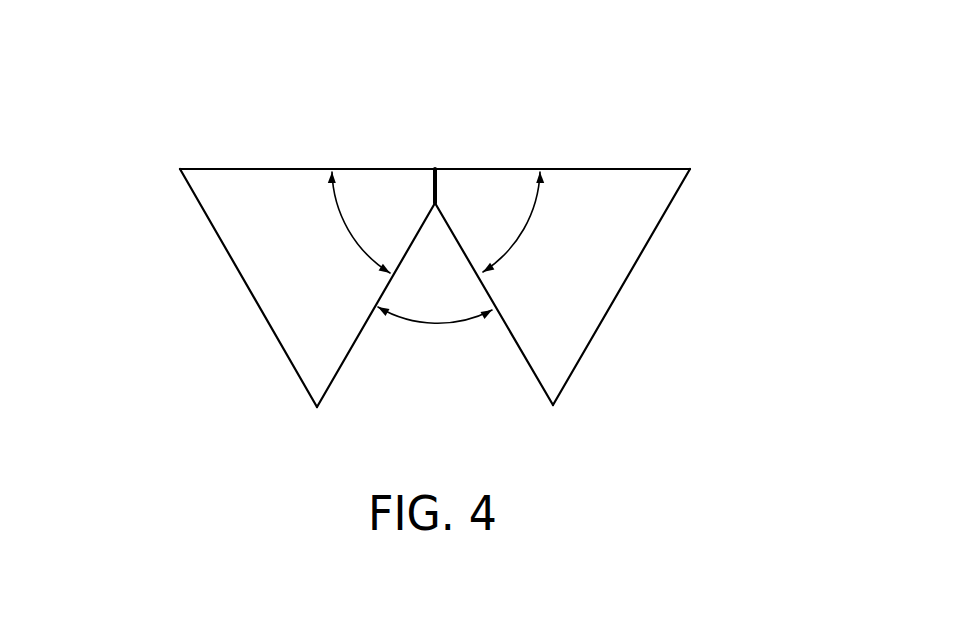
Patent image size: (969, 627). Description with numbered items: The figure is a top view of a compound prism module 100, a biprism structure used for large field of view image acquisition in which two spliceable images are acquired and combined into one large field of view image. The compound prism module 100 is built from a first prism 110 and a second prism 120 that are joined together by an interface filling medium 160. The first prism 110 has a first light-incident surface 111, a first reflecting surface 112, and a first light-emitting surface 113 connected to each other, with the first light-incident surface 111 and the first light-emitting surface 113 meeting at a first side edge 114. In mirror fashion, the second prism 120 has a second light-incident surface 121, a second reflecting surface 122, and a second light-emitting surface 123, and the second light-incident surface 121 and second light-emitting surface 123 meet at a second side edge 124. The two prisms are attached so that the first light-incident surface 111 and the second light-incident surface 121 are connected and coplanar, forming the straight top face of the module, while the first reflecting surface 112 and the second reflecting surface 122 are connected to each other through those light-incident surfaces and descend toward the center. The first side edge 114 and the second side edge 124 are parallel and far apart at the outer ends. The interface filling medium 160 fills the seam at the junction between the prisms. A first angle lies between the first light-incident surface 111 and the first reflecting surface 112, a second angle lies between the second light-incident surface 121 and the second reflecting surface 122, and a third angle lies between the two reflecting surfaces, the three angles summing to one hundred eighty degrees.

The compound prism module 100 is at (693, 100).
The first prism 110 is at (247, 198).
The first light-incident surface 111 is at (255, 163).
The first reflecting surface 112 is at (360, 333).
The first light-emitting surface 113 is at (248, 306).
The first side edge 114 is at (180, 170).
The second prism 120 is at (623, 198).
The second light-incident surface 121 is at (615, 163).
The second reflecting surface 122 is at (510, 336).
The second light-emitting surface 123 is at (622, 306).
The second side edge 124 is at (688, 168).
The interface filling medium 160 is at (437, 168).